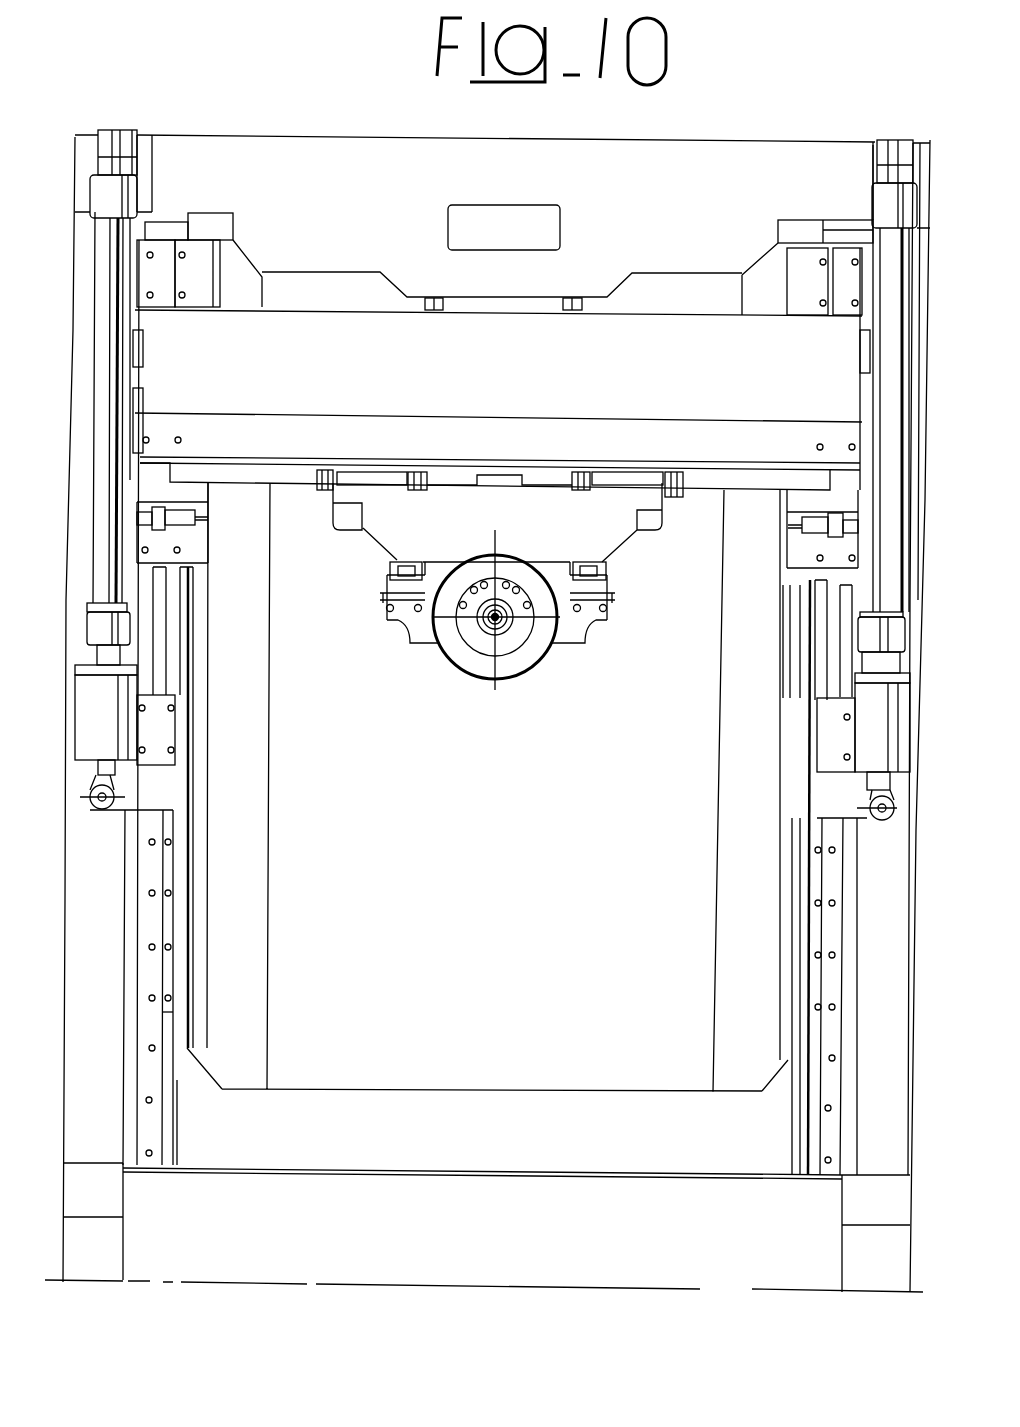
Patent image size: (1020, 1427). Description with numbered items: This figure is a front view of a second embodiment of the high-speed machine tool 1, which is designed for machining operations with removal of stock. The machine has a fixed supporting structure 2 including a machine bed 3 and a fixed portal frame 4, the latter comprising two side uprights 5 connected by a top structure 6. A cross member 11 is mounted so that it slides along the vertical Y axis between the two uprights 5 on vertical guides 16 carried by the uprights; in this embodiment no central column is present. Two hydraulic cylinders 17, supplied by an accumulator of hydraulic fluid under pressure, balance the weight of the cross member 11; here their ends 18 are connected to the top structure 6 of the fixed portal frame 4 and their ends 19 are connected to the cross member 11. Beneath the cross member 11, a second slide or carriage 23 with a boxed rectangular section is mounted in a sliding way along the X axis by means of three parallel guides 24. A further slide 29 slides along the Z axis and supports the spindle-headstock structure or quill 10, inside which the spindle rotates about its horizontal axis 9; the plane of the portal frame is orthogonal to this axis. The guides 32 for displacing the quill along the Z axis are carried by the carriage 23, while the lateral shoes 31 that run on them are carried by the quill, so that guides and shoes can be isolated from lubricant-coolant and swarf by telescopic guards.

The high-speed machine tool 1 is at (63, 456).
The fixed supporting structure 2 is at (54, 1040).
The machine bed 3 is at (245, 1193).
The fixed portal frame 4 is at (850, 138).
The side uprights 5 is at (83, 233).
The top structure 6 is at (188, 157).
The spindle axis 9 is at (487, 627).
The spindle-headstock structure or quill 10 is at (543, 657).
The cross member 11 is at (676, 347).
The vertical guides 16 is at (153, 972).
The cylinders 17 is at (115, 580).
The cylinder ends 18 is at (116, 162).
The cylinder ends 19 is at (108, 770).
The carriage 23 is at (360, 536).
The parallel guides 24 is at (183, 470).
The slide 29 is at (399, 646).
The lateral shoes 31 is at (606, 588).
The guides 32 is at (405, 574).